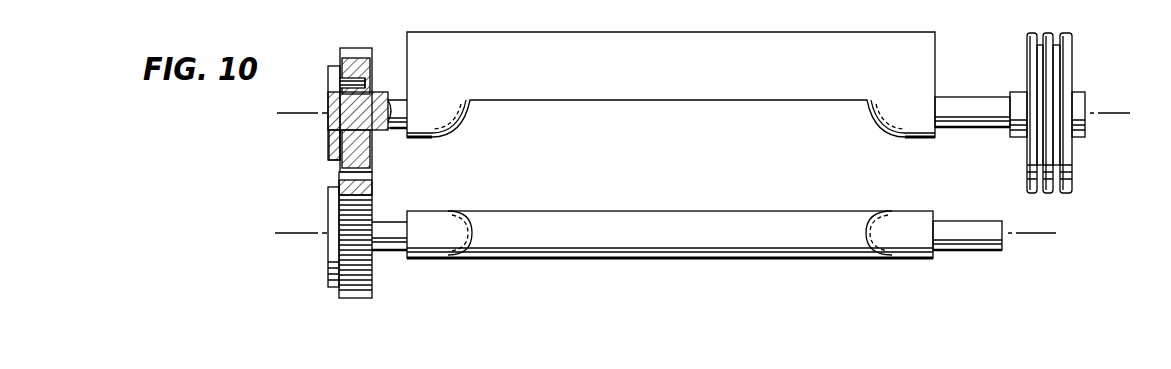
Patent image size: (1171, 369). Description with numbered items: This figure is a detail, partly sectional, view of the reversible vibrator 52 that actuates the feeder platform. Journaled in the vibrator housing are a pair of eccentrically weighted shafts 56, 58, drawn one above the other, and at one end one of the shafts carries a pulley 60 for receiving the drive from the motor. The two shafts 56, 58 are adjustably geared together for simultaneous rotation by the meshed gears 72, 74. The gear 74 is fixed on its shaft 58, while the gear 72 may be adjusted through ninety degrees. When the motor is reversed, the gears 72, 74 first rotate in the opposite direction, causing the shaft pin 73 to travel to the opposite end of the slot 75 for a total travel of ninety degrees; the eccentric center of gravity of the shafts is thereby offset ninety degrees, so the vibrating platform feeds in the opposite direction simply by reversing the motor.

The reversible vibrator 52 is at (720, 259).
The eccentrically weighted shaft 56 is at (960, 110).
The eccentrically weighted shaft 58 is at (977, 233).
The pulley 60 is at (1062, 70).
The gear 72 is at (354, 49).
The shaft pin 73 is at (338, 81).
The gear 74 is at (355, 278).
The slot 75 is at (375, 88).